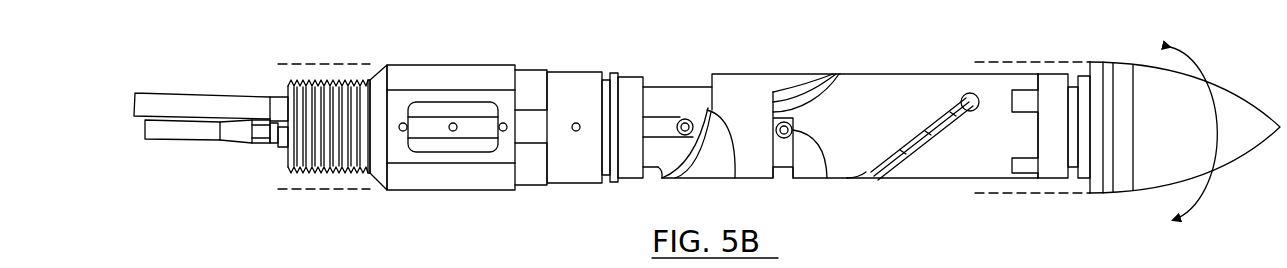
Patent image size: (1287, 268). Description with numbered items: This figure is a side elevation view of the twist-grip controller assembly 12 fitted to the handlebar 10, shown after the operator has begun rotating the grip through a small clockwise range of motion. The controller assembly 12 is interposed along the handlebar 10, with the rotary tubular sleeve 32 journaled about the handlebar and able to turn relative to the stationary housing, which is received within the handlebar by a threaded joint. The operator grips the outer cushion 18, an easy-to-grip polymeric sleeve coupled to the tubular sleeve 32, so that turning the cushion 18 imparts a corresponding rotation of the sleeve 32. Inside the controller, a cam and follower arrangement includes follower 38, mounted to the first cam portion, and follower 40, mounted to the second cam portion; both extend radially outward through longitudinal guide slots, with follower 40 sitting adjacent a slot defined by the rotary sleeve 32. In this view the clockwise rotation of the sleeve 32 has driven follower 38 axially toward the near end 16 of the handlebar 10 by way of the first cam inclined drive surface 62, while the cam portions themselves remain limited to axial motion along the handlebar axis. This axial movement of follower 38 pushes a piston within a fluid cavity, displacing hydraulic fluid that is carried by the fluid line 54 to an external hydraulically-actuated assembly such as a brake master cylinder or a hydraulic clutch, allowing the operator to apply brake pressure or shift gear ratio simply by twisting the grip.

The handlebar 10 is at (352, 62).
The twist-grip controller assembly 12 is at (840, 60).
The near end 16 is at (290, 173).
The outer cushion 18 is at (1040, 62).
The rotary tubular sleeve 32 is at (902, 87).
The follower 38 is at (684, 119).
The follower 40 is at (827, 178).
The fluid line 54 is at (188, 137).
The first cam inclined drive surface 62 is at (735, 178).